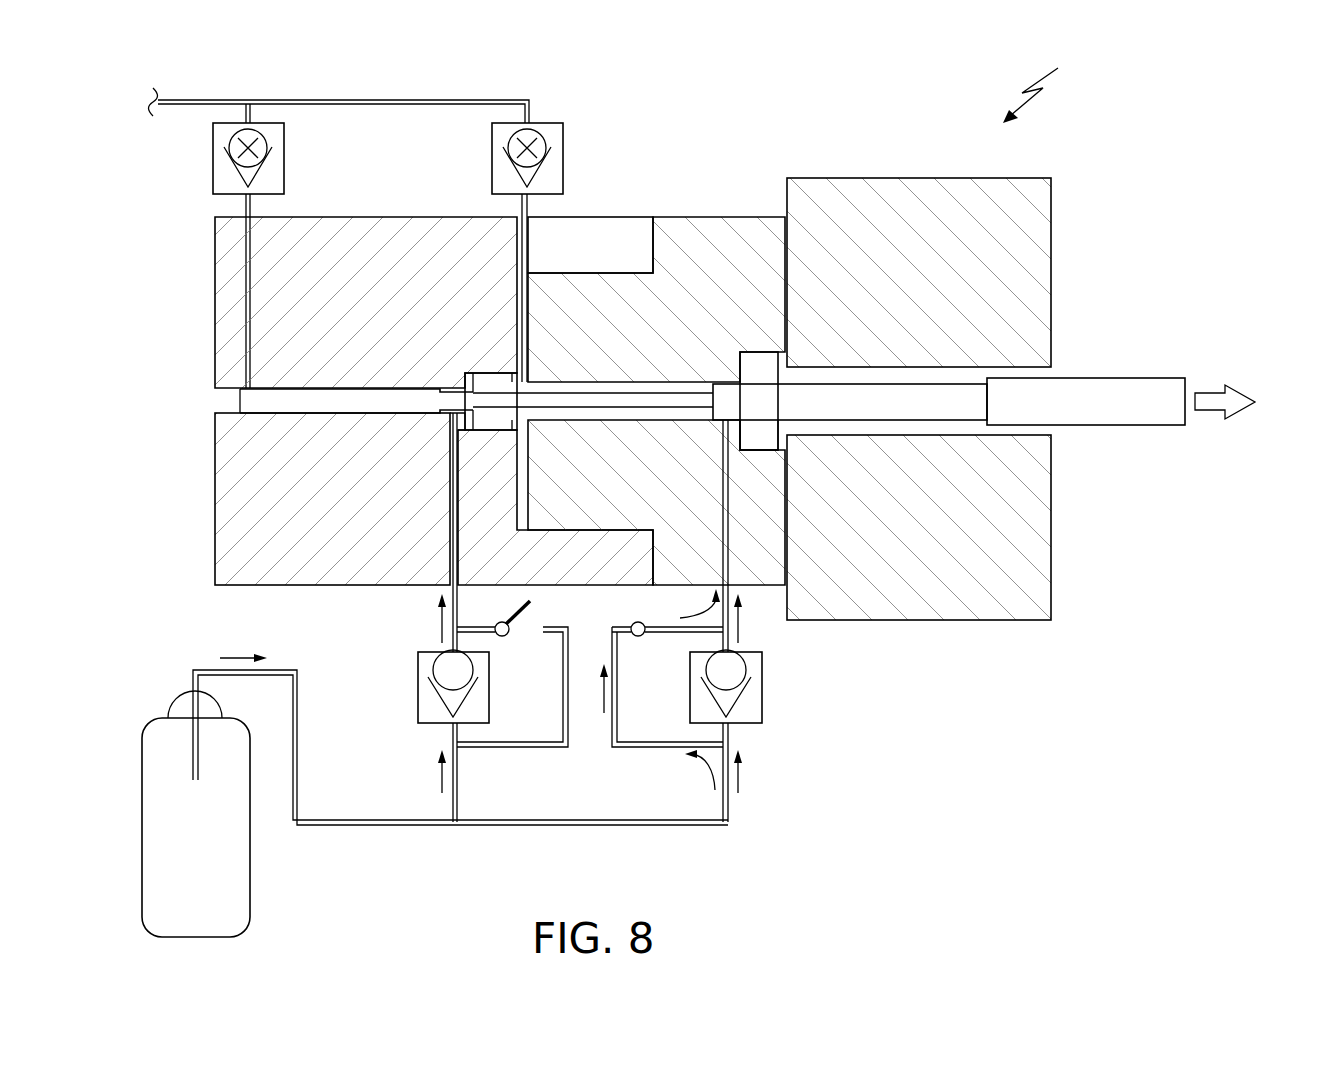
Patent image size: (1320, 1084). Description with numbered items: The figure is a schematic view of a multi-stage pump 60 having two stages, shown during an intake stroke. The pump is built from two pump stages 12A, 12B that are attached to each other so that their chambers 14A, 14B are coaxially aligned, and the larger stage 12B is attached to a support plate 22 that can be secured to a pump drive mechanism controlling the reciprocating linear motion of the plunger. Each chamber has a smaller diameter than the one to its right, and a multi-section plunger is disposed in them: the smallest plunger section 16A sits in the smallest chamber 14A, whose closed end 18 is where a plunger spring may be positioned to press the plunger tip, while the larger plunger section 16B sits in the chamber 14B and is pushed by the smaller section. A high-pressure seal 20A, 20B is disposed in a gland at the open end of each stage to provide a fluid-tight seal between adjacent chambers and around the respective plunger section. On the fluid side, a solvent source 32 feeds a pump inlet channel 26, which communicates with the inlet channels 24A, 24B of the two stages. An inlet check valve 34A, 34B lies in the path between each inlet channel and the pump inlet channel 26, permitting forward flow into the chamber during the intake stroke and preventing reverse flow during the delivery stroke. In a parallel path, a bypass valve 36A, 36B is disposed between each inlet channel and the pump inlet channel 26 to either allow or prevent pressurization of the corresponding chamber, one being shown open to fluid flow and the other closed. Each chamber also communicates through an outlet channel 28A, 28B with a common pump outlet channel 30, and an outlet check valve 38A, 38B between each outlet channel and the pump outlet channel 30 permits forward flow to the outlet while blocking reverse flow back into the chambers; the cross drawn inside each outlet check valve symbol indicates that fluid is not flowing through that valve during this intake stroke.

The multi-stage pump 60 is at (1047, 82).
The pump outlet channel 30 is at (207, 98).
The outlet check valve 38A is at (285, 154).
The outlet check valve 38B is at (565, 154).
The outlet channel 28A is at (252, 252).
The outlet channel 28B is at (532, 252).
The pump stage 12A is at (404, 327).
The pump stage 12B is at (680, 327).
The support plate 22 is at (932, 297).
The closed end 18 is at (240, 400).
The chamber 14A is at (238, 410).
The chamber 14B is at (587, 385).
The plunger section 16A is at (453, 400).
The plunger section 16B is at (727, 393).
The high-pressure seal 20A is at (487, 423).
The high-pressure seal 20B is at (755, 443).
The inlet channel 24A is at (451, 516).
The inlet channel 24B is at (723, 516).
The inlet check valve 34A is at (418, 685).
The inlet check valve 34B is at (762, 685).
The bypass valve 36A is at (503, 637).
The bypass valve 36B is at (640, 637).
The source 32 is at (212, 845).
The pump inlet channel 26 is at (370, 826).